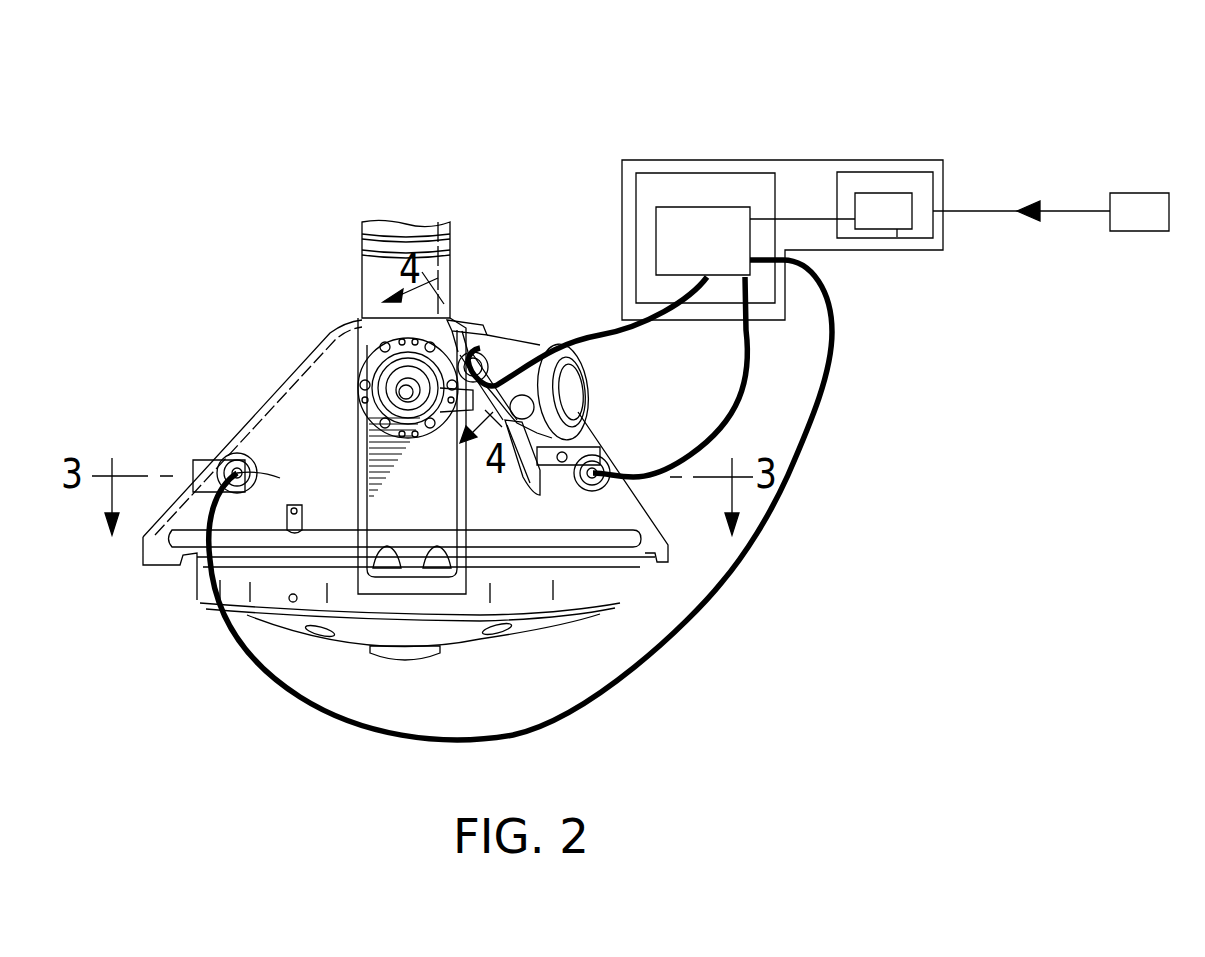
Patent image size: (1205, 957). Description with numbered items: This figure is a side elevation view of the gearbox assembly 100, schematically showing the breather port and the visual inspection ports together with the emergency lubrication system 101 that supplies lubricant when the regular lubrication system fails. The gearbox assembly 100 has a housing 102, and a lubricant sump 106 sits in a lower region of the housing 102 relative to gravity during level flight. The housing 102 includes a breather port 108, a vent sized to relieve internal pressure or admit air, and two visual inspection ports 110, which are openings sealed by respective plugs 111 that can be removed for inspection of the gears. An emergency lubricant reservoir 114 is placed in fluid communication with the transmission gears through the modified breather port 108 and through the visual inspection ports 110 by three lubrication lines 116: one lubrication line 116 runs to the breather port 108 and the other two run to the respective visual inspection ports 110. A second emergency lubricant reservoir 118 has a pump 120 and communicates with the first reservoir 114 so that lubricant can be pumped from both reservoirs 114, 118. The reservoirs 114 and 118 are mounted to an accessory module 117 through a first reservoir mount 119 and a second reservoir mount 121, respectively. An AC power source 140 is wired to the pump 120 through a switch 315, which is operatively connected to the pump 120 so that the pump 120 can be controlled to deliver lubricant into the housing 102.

The gearbox assembly 100 is at (548, 252).
The emergency lubrication system 101 is at (1027, 277).
The housing 102 is at (465, 315).
The lubricant sump 106 is at (467, 632).
The breather port 108 is at (497, 353).
The visual inspection ports 110 is at (232, 452).
The plugs 111 is at (255, 475).
The emergency lubricant reservoir 114 is at (712, 240).
The lubrication lines 116 is at (620, 327).
The accessory module 117 is at (812, 160).
The second emergency lubricant reservoir 118 is at (888, 190).
The first reservoir mount 119 is at (710, 188).
The pump 120 is at (897, 237).
The second reservoir mount 121 is at (925, 180).
The AC power source 140 is at (1145, 193).
The switch 315 is at (1033, 195).